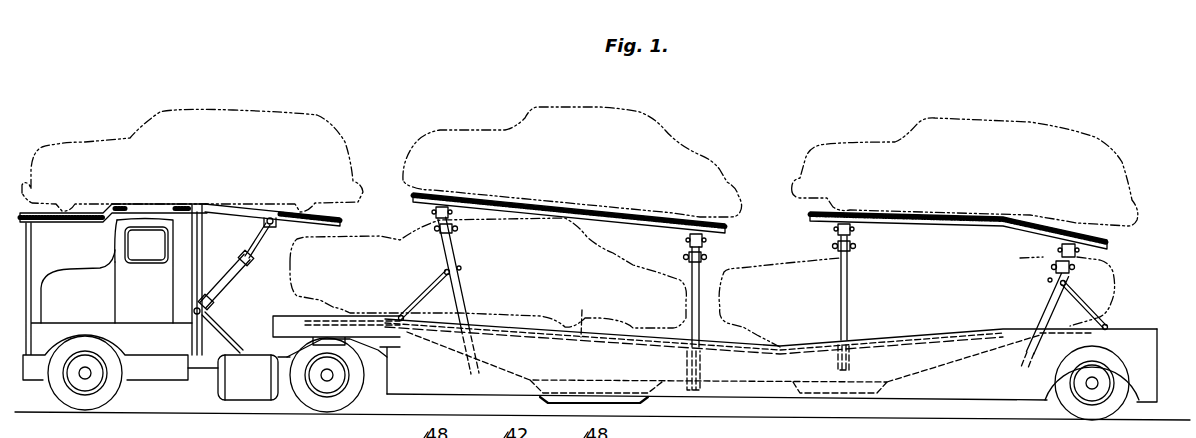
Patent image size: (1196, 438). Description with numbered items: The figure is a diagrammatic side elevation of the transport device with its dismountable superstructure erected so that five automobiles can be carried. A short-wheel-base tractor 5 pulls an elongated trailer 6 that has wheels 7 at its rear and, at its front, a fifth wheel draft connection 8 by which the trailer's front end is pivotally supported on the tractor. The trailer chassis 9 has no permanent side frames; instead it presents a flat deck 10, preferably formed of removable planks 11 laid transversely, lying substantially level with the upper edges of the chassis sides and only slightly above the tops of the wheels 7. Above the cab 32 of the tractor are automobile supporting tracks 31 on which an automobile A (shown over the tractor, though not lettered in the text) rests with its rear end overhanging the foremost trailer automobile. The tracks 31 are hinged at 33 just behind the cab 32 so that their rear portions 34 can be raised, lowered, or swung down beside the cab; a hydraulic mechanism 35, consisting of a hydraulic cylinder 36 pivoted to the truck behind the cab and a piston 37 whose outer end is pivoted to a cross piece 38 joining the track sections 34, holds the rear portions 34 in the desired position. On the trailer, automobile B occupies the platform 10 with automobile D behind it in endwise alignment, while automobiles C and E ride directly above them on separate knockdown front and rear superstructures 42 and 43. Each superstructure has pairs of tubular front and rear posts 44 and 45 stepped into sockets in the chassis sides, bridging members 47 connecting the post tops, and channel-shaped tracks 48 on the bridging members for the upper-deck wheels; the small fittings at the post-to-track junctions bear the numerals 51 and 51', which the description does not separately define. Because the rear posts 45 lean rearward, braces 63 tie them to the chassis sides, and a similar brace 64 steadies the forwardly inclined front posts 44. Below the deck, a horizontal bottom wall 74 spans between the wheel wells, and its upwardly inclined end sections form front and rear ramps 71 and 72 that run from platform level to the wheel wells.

The tractor 5 is at (136, 295).
The trailer 6 is at (421, 372).
The wheels 7 is at (1122, 372).
The fifth wheel draft connection 8 is at (337, 323).
The chassis 9 is at (944, 386).
The deck 10 is at (776, 340).
The planks 11 is at (590, 313).
The automobile supporting tracks 31 is at (168, 204).
The cab 32 is at (113, 238).
The hinge 33 is at (203, 205).
The rear portions of the tracks 34 is at (282, 205).
The hydraulic mechanism 35 is at (247, 275).
The hydraulic cylinder 36 is at (236, 263).
The piston 37 is at (253, 240).
The cross piece 38 is at (288, 228).
The front superstructure 42 is at (585, 228).
The rear superstructure 43 is at (955, 231).
The front posts 44 is at (455, 250).
The rear posts 45 is at (692, 286).
The bridging members 47 is at (434, 209).
The channel-shaped tracks 48 is at (653, 220).
The post clamp 51 is at (882, 244).
The lower post clamp 51' is at (776, 254).
The braces 63 is at (1096, 304).
The brace 64 is at (419, 292).
The front inclined ramp 71 is at (476, 370).
The rear inclined ramp 72 is at (984, 360).
The bottom wall 74 is at (720, 383).
The automobile A is at (245, 110).
The automobile B is at (386, 236).
The automobile C is at (654, 100).
The automobile D is at (785, 262).
The automobile E is at (920, 125).